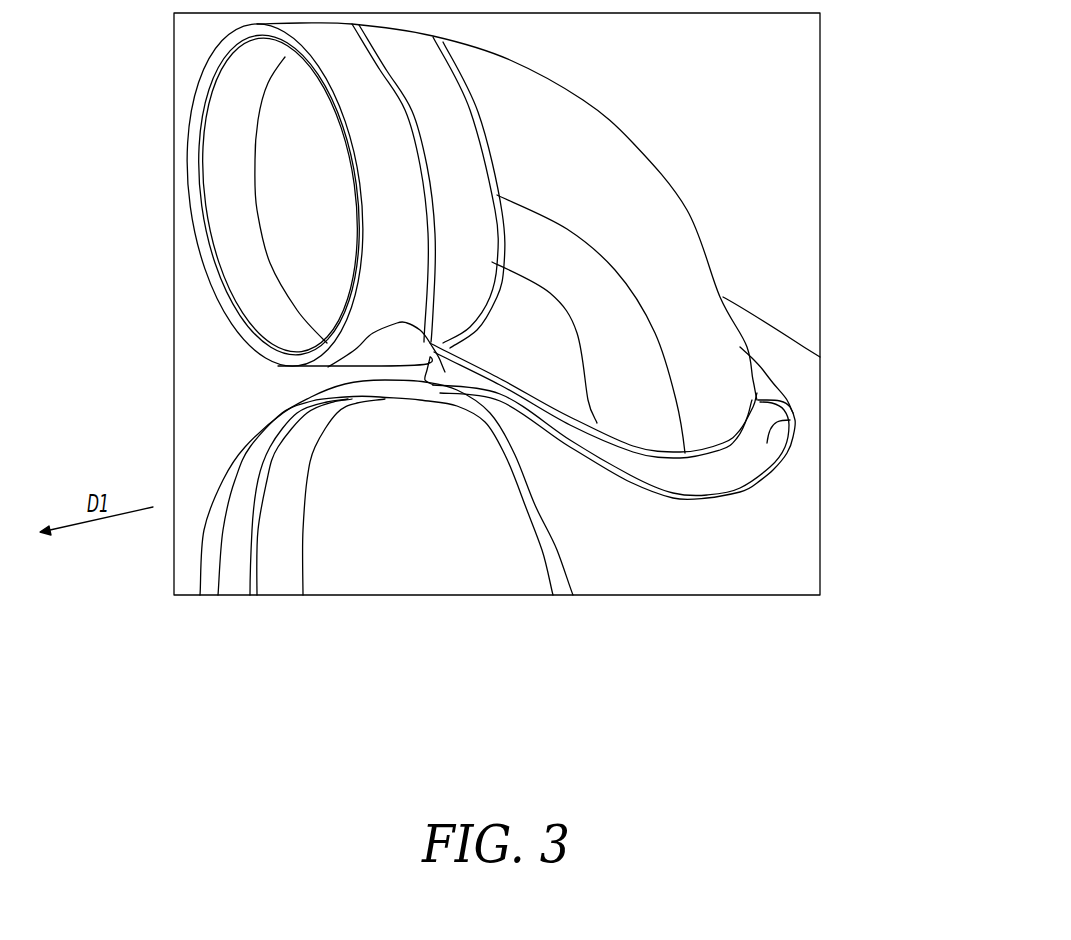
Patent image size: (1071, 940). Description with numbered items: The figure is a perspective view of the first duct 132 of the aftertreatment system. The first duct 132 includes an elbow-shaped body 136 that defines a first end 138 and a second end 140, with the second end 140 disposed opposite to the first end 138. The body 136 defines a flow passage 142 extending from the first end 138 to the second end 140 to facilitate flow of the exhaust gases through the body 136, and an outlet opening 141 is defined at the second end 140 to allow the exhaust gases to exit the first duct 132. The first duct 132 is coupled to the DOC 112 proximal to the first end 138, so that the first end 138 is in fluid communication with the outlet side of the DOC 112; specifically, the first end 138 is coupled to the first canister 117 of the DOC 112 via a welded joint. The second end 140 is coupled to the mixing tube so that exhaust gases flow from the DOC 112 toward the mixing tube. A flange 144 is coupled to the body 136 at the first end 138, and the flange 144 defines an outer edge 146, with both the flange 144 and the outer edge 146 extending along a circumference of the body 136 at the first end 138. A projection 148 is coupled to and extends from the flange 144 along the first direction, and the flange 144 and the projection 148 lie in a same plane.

The DOC 112 is at (771, 299).
The first canister 117 is at (618, 557).
The first duct 132 is at (763, 100).
The body 136 is at (558, 125).
The first end 138 is at (790, 403).
The second end 140 is at (190, 104).
The outlet opening 141 is at (230, 145).
The flow passage 142 is at (260, 173).
The flange 144 is at (790, 420).
The outer edge 146 is at (760, 483).
The projection 148 is at (422, 368).